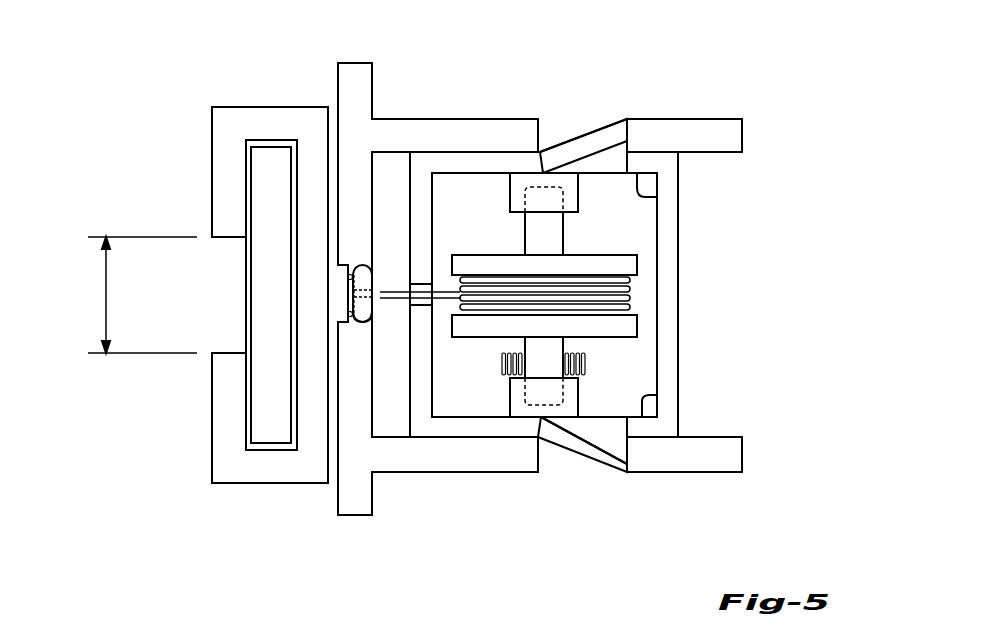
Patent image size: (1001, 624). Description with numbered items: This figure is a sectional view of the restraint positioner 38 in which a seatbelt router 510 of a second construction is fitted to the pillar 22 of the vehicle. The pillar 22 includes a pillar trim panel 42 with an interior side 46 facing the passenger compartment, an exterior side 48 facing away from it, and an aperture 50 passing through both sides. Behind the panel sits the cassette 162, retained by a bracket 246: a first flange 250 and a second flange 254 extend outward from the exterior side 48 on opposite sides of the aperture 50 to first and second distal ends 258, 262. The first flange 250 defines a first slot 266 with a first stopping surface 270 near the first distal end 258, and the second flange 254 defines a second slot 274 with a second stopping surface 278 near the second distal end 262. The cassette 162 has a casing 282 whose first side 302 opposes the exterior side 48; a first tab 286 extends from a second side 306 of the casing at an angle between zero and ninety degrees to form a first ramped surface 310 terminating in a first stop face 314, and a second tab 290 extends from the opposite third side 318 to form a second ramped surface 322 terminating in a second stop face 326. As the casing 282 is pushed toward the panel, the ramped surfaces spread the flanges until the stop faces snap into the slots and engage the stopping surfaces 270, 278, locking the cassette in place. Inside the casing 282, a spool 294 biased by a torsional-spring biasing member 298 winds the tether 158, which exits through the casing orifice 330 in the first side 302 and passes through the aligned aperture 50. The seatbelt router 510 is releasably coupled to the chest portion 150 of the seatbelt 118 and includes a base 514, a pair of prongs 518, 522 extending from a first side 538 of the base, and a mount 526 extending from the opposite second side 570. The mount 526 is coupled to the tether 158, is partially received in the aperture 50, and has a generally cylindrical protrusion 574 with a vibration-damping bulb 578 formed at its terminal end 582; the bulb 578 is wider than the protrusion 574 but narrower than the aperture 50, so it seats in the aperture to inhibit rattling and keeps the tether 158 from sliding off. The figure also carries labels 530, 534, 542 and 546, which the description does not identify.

The pillar 22 is at (379, 57).
The restraint positioner 38 is at (142, 476).
The pillar trim panel 42 is at (350, 68).
The interior side 46 is at (336, 80).
The exterior side 48 is at (374, 80).
The aperture 50 is at (348, 324).
The seatbelt 118 is at (238, 437).
The chest portion 150 is at (258, 328).
The tether 158 is at (440, 300).
The cassette 162 is at (690, 220).
The bracket 246 is at (728, 111).
The first flange 250 is at (736, 118).
The second flange 254 is at (735, 472).
The first distal end 258 is at (742, 140).
The second distal end 262 is at (742, 455).
The first slot 266 is at (550, 121).
The first stopping surface 270 is at (653, 122).
The second slot 274 is at (542, 458).
The second stopping surface 278 is at (630, 455).
The casing 282 is at (678, 268).
The first tab 286 is at (600, 123).
The second tab 290 is at (590, 452).
The spool 294 is at (637, 325).
The biasing member 298 is at (588, 365).
The first side 302 is at (397, 393).
The second side 306 is at (657, 195).
The first ramped surface 310 is at (560, 122).
The first stop face 314 is at (640, 122).
The third side 318 is at (643, 393).
The second ramped surface 322 is at (570, 452).
The second stop face 326 is at (627, 468).
The casing orifice 330 is at (418, 283).
The seatbelt router 510 is at (212, 485).
The base 514 is at (310, 462).
The prong 518 is at (277, 467).
The prong 522 is at (263, 118).
The mount 526 is at (337, 302).
The side surface of mount 530 is at (313, 485).
The top surface of mount 534 is at (318, 106).
The first side 538 is at (260, 383).
The outer wall 542 is at (247, 180).
The height 546 is at (106, 295).
The second side 570 is at (345, 125).
The protrusion 574 is at (349, 265).
The bulb 578 is at (364, 320).
The terminal end 582 is at (374, 278).